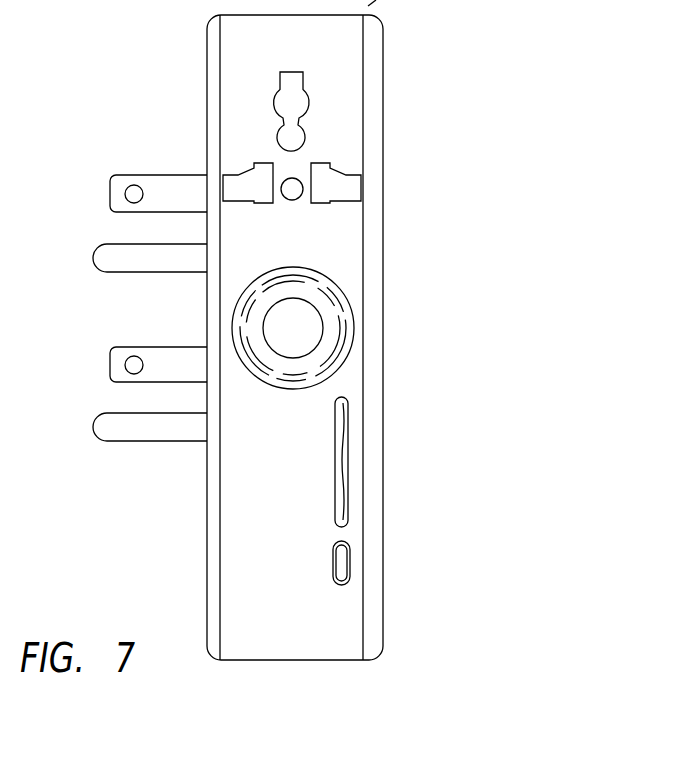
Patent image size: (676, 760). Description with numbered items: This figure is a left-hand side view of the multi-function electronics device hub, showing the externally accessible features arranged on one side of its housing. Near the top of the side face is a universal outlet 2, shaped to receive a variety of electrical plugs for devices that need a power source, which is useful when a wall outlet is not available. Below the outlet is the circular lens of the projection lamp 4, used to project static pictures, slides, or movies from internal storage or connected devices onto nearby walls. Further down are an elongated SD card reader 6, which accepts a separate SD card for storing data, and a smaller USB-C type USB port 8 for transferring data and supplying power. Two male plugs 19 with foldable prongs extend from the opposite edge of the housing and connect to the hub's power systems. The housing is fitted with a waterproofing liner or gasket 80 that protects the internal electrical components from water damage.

The universal outlet 2 is at (297, 99).
The projection lamp 4 is at (342, 337).
The SD card reader 6 is at (348, 462).
The USB port 8 is at (350, 563).
The male plug 19 is at (152, 174).
The waterproofing liner or gasket 80 is at (363, 220).